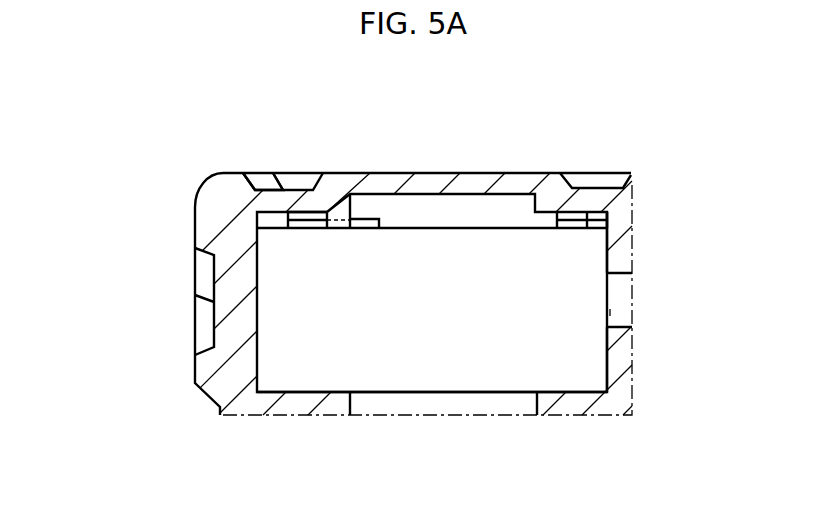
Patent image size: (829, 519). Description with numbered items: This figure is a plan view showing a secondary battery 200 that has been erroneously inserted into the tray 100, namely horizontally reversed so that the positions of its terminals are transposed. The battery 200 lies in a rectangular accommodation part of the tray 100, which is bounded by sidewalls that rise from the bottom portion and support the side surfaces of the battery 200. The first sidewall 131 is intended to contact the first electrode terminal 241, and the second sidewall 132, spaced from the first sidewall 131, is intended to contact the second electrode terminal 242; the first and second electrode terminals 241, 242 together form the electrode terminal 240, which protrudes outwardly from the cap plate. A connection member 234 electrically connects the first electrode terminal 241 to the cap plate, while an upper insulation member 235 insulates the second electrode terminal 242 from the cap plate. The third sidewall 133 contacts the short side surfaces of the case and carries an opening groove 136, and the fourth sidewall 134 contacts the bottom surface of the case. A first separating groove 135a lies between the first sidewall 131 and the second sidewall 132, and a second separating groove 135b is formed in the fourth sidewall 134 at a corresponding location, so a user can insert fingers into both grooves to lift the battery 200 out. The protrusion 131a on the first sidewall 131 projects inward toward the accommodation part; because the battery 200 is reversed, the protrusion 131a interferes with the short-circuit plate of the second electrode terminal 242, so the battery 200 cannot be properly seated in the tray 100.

The tray 100 is at (195, 282).
The first sidewall 131 is at (296, 187).
The protrusion 131a is at (337, 228).
The second sidewall 132 is at (595, 197).
The third sidewall 133 is at (623, 258).
The fourth sidewall 134 is at (333, 407).
The first separating groove 135a is at (430, 194).
The second separating groove 135b is at (380, 399).
The opening groove 136 is at (608, 313).
The secondary battery 200 is at (610, 382).
The connection member 234 is at (609, 223).
The upper insulation member 235 is at (246, 186).
The electrode terminal 240 is at (543, 112).
The first electrode terminal 241 is at (567, 211).
The second electrode terminal 242 is at (317, 211).